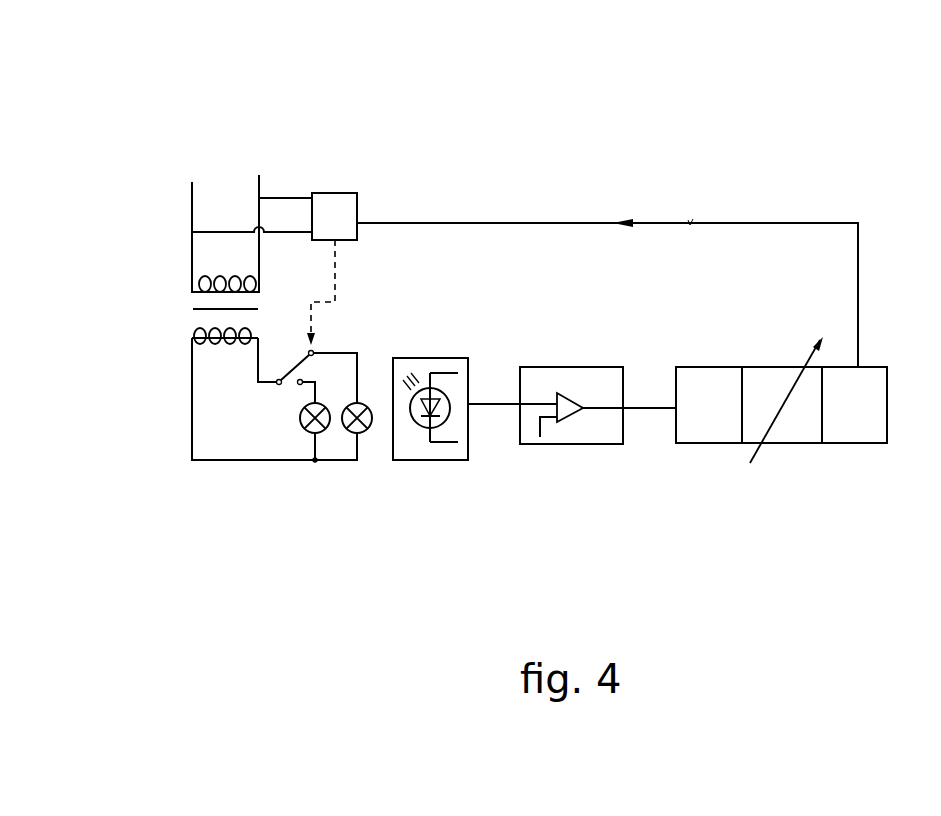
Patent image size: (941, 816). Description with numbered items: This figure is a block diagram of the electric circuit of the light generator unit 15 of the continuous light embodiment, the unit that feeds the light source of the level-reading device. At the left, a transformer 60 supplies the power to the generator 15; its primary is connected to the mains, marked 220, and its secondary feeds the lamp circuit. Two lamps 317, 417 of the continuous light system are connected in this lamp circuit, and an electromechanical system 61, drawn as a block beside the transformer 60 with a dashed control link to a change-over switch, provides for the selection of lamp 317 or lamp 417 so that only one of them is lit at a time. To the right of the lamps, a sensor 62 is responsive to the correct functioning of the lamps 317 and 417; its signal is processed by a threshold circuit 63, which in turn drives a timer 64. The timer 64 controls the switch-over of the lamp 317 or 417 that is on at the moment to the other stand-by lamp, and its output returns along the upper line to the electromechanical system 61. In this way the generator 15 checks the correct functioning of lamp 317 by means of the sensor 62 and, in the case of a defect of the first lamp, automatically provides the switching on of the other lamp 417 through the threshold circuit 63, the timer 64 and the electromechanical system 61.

The light generator unit 15 is at (682, 153).
The transformer 60 is at (203, 330).
The electromechanical system 61 is at (340, 200).
The sensor 62 is at (432, 365).
The threshold circuit 63 is at (572, 375).
The timer 64 is at (753, 375).
The lamp 417 is at (308, 428).
The lamp 317 is at (365, 425).
The 220 V mains supply 220 is at (228, 197).